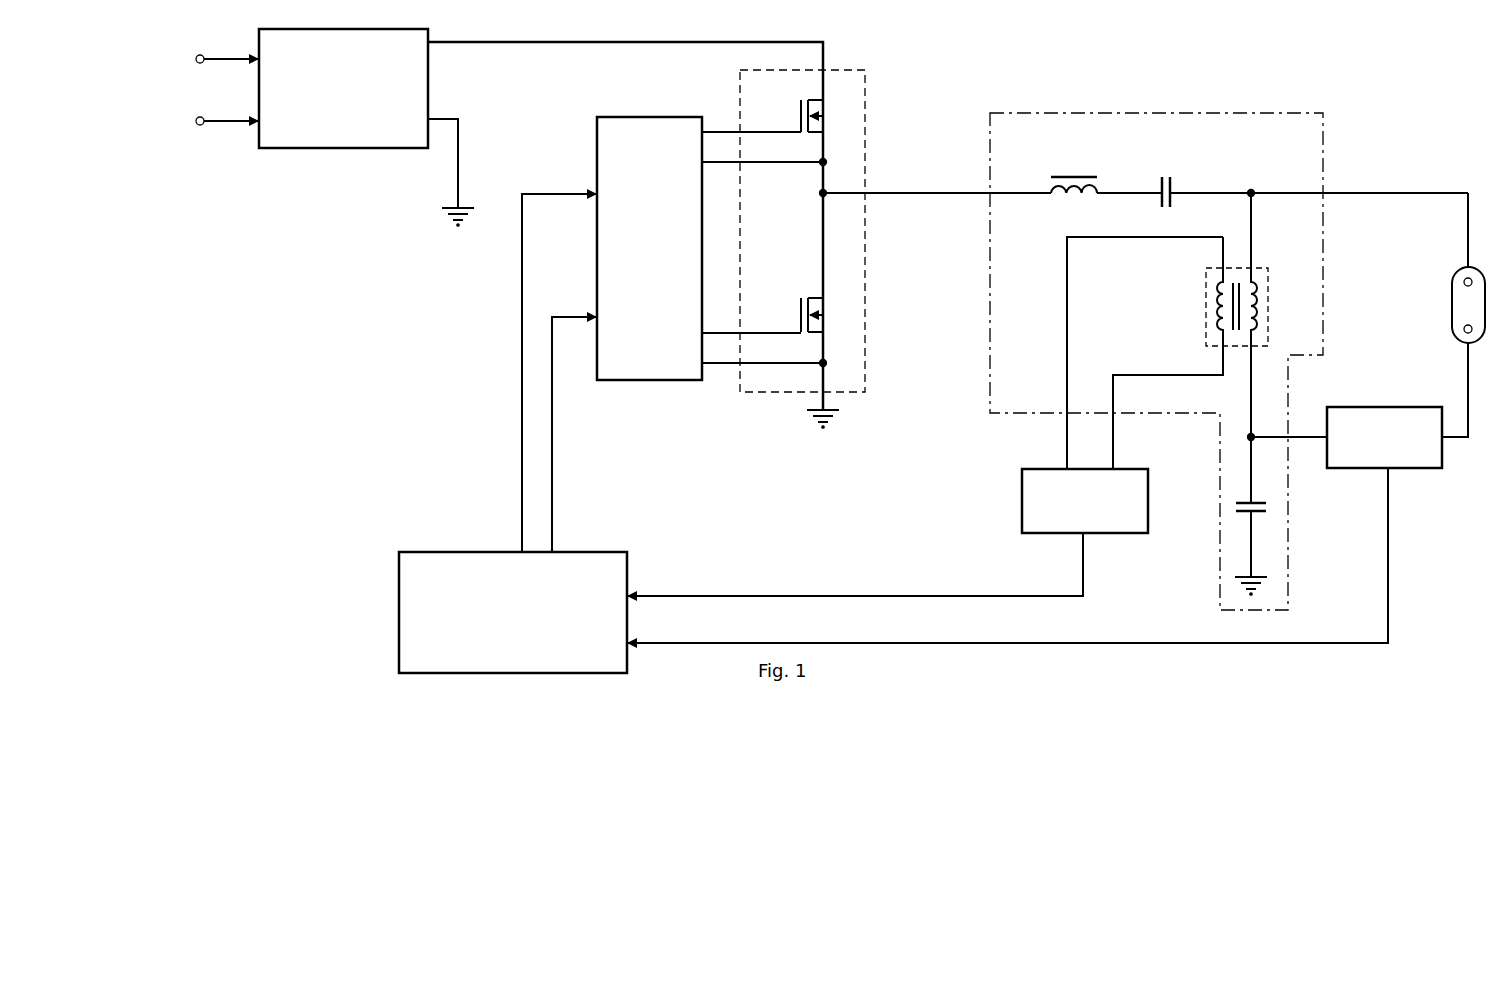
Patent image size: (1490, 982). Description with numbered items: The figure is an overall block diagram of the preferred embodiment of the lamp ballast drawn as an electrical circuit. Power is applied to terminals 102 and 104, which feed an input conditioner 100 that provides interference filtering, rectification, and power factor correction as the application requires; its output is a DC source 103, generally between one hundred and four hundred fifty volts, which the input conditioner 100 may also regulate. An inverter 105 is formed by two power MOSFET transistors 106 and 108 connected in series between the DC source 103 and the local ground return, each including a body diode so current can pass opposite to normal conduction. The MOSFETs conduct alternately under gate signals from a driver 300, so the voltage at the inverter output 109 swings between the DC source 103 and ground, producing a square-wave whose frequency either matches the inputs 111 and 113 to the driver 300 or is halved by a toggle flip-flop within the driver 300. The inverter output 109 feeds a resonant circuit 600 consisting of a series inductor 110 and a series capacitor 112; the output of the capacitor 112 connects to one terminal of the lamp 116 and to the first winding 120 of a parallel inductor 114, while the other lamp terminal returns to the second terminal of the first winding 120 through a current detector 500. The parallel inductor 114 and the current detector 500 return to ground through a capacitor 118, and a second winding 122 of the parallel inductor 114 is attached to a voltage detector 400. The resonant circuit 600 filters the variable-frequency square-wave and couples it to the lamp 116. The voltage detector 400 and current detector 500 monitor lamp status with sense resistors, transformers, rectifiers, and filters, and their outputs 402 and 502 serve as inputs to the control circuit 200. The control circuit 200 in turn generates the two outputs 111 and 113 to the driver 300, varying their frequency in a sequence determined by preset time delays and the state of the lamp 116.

The input conditioner 100 is at (315, 152).
The terminal 102 is at (226, 57).
The terminal 104 is at (226, 118).
The DC source 103 is at (818, 38).
The inverter 105 is at (865, 70).
The power MOSFET transistor 106 is at (800, 125).
The power MOSFET transistor 108 is at (800, 323).
The inverter output 109 is at (955, 190).
The series inductor 110 is at (1050, 190).
The output 111 is at (577, 190).
The output 113 is at (577, 313).
The series capacitor 112 is at (1172, 180).
The parallel inductor 114 is at (1212, 348).
The lamp 116 is at (1452, 322).
The capacitor 118 is at (1258, 512).
The first winding 120 is at (1253, 322).
The second winding 122 is at (1222, 322).
The control circuit 200 is at (470, 551).
The driver 300 is at (645, 116).
The voltage detector 400 is at (1020, 517).
The output 402 is at (655, 592).
The current detector 500 is at (1390, 406).
The output 502 is at (655, 640).
The resonant circuit 600 is at (1143, 113).